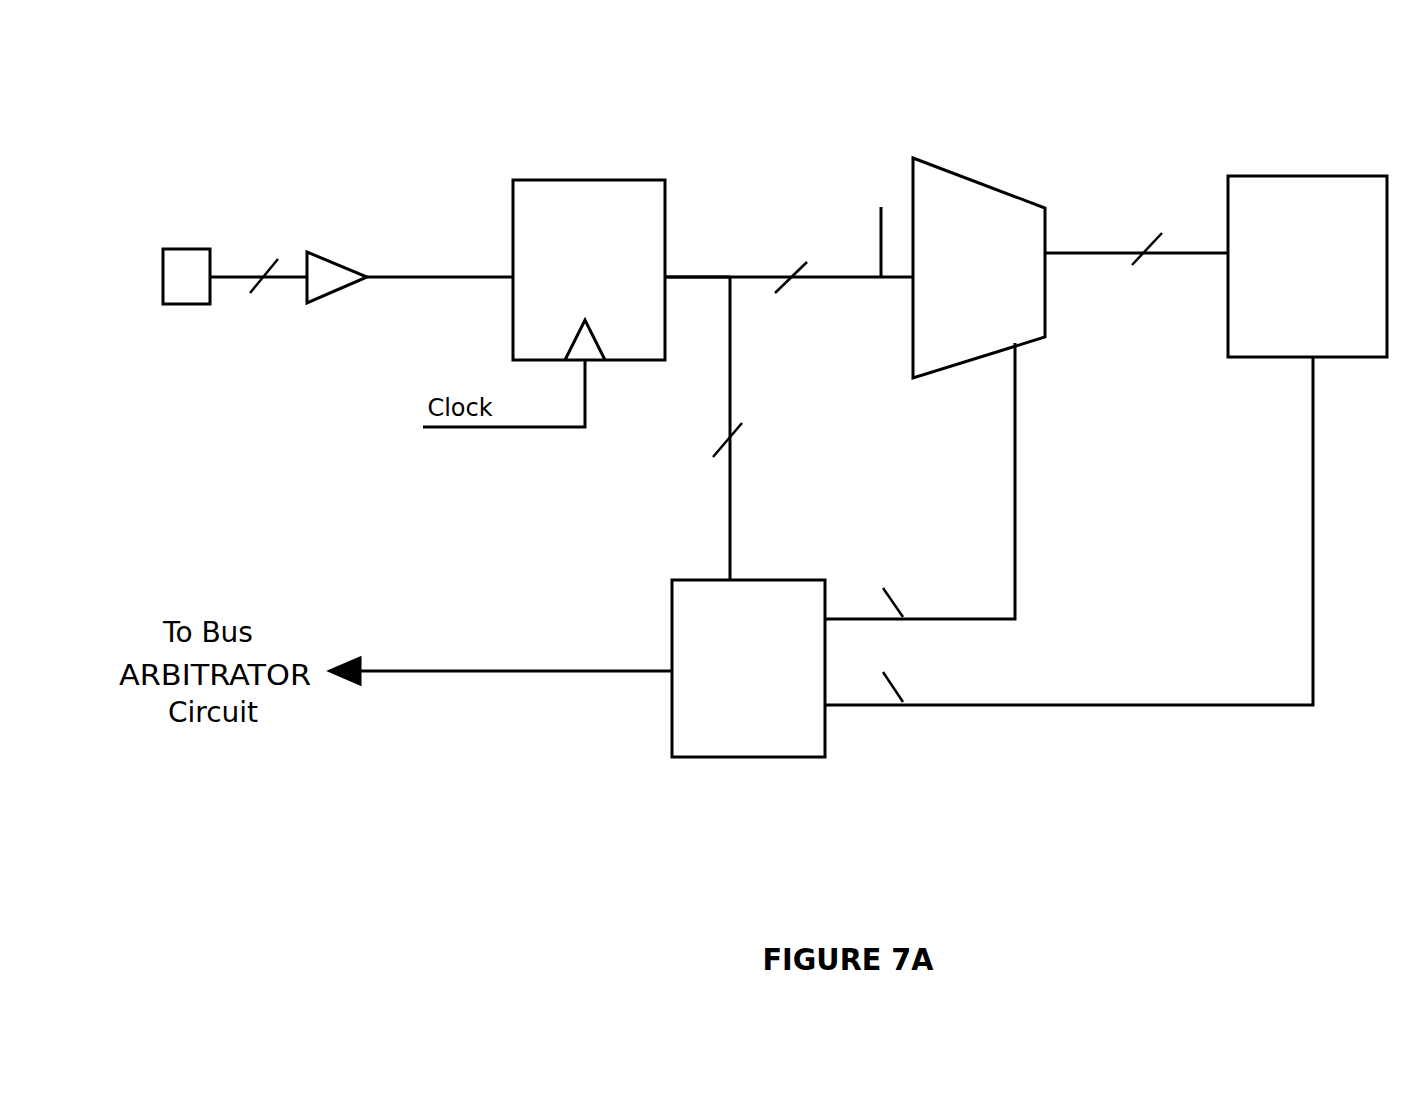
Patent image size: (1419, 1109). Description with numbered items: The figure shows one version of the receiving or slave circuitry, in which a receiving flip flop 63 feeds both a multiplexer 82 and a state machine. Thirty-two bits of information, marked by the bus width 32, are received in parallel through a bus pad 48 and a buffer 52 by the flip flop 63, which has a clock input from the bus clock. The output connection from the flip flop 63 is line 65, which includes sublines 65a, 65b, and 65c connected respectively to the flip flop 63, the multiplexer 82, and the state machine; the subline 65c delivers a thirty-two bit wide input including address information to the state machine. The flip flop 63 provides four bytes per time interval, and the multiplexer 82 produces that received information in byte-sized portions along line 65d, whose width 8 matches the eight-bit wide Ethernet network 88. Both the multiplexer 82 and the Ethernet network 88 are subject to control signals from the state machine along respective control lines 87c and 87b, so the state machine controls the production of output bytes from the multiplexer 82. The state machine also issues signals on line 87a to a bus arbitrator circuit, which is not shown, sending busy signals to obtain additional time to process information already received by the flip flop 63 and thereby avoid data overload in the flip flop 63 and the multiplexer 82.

The bus pad 48 is at (186, 247).
The bus width of 32 bits 32 is at (529, 343).
The buffer 52 is at (320, 253).
The receiving flip flop 63 is at (568, 180).
The line 65 is at (718, 195).
The subline 65a is at (694, 280).
The subline 65b is at (867, 222).
The subline 65c is at (730, 393).
The line 65d is at (1190, 255).
The bus width of 8 bits 8 is at (1158, 233).
The multiplexer 82 is at (948, 168).
The Ethernet network 88 is at (1298, 175).
The line to bus arbitrator circuit 87a is at (503, 671).
The control line 87b is at (1141, 707).
The control line 87c is at (1017, 475).